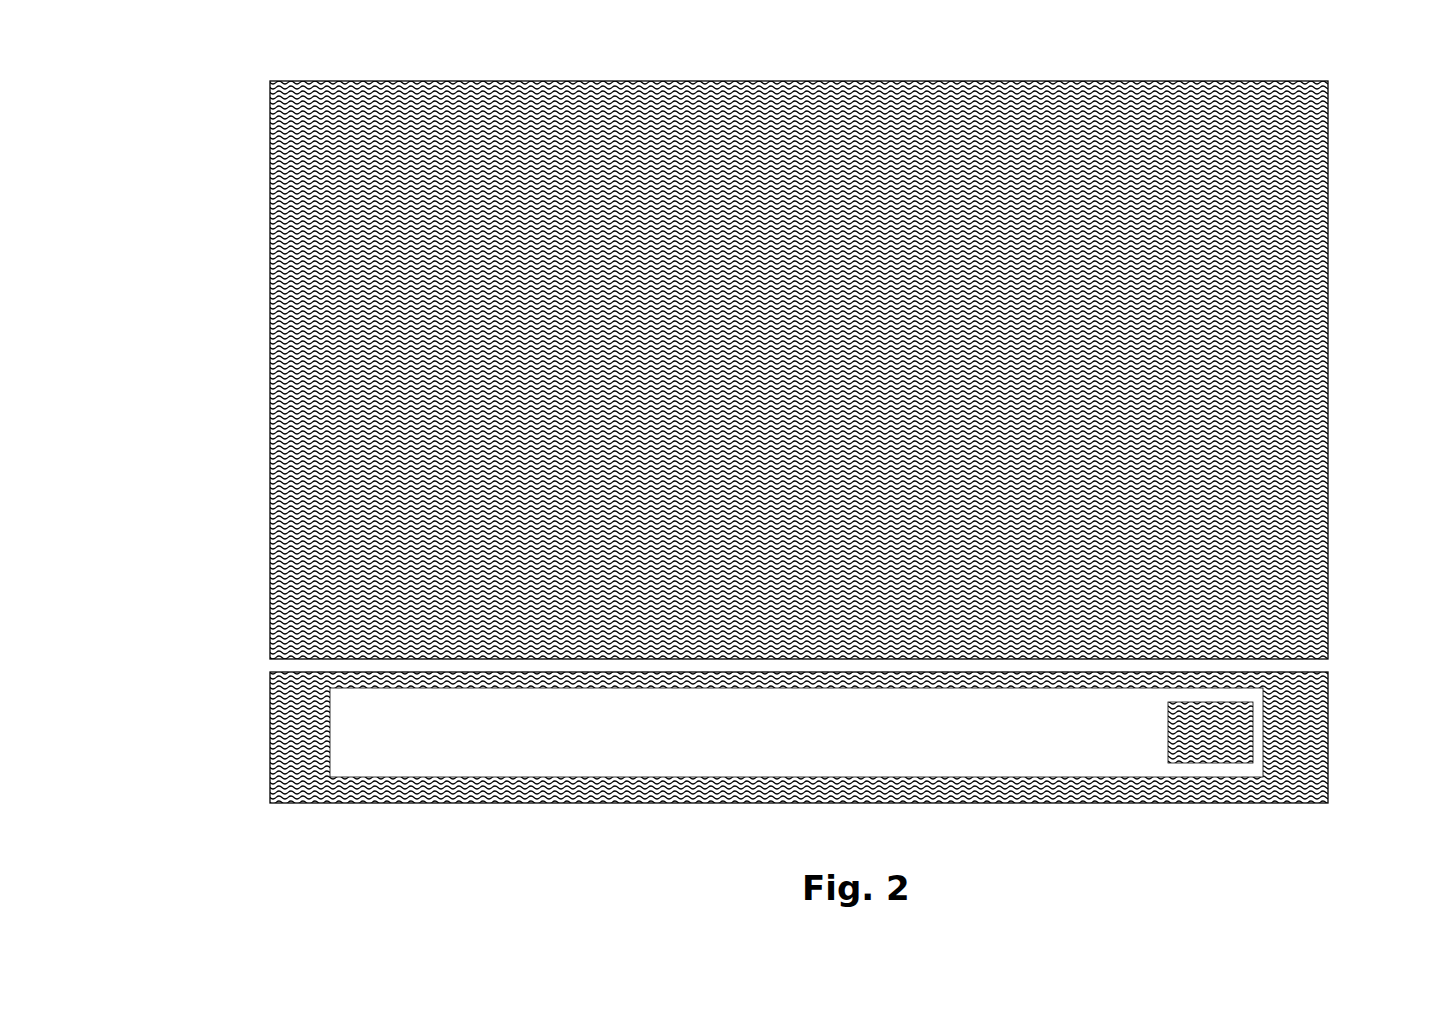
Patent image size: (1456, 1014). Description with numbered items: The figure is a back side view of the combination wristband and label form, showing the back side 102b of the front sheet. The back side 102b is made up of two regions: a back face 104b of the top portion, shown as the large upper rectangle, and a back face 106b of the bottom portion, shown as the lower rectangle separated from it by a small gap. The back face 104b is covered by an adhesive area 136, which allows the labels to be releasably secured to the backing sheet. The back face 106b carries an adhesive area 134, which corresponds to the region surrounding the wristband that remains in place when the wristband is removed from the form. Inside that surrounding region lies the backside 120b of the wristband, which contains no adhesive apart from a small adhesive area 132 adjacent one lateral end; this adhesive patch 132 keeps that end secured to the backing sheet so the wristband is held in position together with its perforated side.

The back side 102b is at (785, 470).
The back face of the top portion 104b is at (804, 370).
The adhesive area 136 is at (313, 427).
The back face of the bottom portion 106b is at (778, 780).
The adhesive area 134 is at (406, 788).
The backside of the wristband 120b is at (1067, 753).
The adhesive area 132 is at (1222, 729).